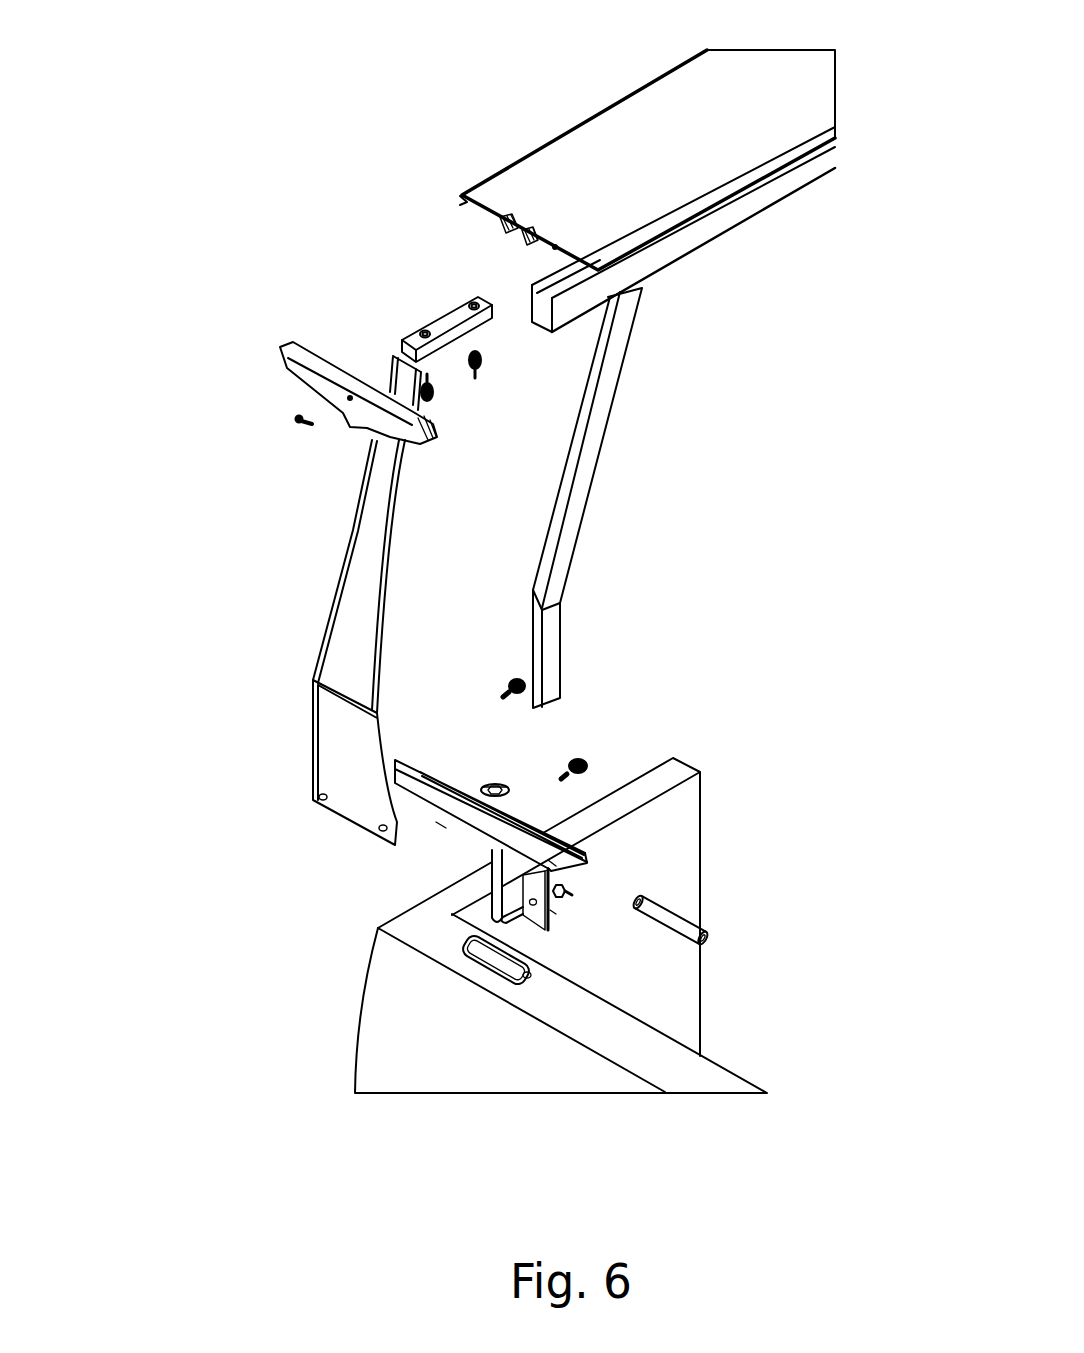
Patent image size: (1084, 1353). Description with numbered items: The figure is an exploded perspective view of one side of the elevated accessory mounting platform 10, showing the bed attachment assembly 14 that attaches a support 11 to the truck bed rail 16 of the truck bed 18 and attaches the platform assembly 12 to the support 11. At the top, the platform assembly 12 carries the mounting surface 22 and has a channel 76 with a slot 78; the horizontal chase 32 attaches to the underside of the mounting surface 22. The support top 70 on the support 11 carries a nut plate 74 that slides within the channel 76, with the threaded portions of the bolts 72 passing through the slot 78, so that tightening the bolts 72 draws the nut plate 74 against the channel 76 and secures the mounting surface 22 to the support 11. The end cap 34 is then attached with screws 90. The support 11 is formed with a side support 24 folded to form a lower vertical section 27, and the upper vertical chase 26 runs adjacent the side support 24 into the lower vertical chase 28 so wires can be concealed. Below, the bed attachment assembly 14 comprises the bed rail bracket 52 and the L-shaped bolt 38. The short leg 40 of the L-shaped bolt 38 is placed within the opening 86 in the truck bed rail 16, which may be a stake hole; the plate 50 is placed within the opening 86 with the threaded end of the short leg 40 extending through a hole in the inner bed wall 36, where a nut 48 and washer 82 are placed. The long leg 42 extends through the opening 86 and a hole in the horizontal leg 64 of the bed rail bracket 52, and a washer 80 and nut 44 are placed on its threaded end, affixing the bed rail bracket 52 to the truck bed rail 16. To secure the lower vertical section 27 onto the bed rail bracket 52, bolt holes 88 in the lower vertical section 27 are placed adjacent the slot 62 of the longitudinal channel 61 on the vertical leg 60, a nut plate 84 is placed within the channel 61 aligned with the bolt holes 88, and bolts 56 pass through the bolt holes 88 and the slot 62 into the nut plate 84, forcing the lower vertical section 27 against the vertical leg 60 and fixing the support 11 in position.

The elevated accessory mounting platform 10 is at (342, 483).
The support 11 is at (342, 534).
The platform assembly 12 is at (606, 222).
The bed attachment assembly 14 is at (569, 913).
The truck bed rail 16 is at (423, 932).
The truck bed 18 is at (507, 925).
The mounting surface 22 is at (490, 183).
The side support 24 is at (291, 616).
The upper vertical chase 26 is at (647, 498).
The lower vertical section 27 is at (311, 778).
The lower vertical chase 28 is at (563, 645).
The horizontal chase 32 is at (550, 337).
The end cap 34 is at (293, 341).
The inner bed wall 36 is at (648, 1025).
The L-shaped bolt 38 is at (487, 920).
The short leg 40 is at (553, 919).
The long leg 42 is at (478, 885).
The nut 44 is at (504, 779).
The nut 48 is at (565, 884).
The plate 50 is at (569, 969).
The bed rail bracket 52 is at (459, 845).
The bolt 56 is at (504, 683).
The vertical leg 60 is at (439, 823).
The longitudinal channel 61 is at (570, 882).
The slot 62 is at (570, 850).
The horizontal leg 64 is at (510, 817).
The support top 70 is at (483, 327).
The bolt 72 is at (472, 382).
The nut plate 74 is at (451, 360).
The channel 76 is at (503, 228).
The slot 78 is at (523, 238).
The washer 80 is at (480, 785).
The washer 82 is at (560, 913).
The nut plate 84 is at (690, 909).
The opening 86 is at (520, 968).
The bolt holes 88 is at (374, 831).
The screws 90 is at (286, 416).